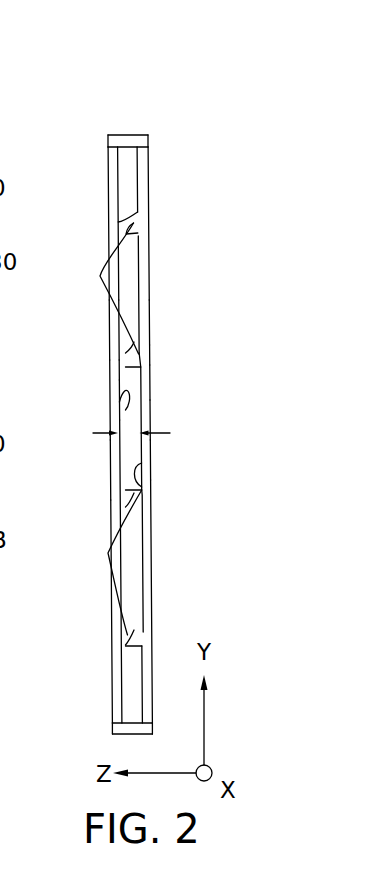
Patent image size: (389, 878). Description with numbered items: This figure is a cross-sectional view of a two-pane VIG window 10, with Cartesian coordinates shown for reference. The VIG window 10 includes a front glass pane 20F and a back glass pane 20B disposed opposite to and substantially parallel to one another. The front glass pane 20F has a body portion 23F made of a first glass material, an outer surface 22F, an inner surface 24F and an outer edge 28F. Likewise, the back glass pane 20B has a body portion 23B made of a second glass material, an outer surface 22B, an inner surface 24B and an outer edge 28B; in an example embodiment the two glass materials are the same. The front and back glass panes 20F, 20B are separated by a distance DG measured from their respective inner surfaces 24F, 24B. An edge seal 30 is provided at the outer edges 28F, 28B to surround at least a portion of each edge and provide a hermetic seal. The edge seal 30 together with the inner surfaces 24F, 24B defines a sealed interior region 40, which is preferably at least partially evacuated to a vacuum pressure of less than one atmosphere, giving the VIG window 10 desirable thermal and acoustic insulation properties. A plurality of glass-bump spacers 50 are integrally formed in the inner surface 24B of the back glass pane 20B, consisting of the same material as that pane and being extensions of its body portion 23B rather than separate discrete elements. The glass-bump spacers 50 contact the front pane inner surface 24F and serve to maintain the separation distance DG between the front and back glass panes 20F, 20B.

The VIG window 10 is at (116, 76).
The front glass pane 20F is at (104, 176).
The back glass pane 20B is at (156, 162).
The outer surface of front glass pane 22F is at (110, 473).
The outer surface of back glass pane 22B is at (150, 330).
The body portion of front glass pane 23F is at (112, 347).
The body portion of back glass pane 23B is at (148, 390).
The inner surface of front glass pane 24F is at (119, 396).
The inner surface of back glass pane 24B is at (135, 463).
The outer edge of front glass pane 28F is at (110, 142).
The outer edge of back glass pane 28B is at (148, 138).
The edge seal 30 is at (129, 139).
The sealed interior region 40 is at (131, 278).
The glass-bump spacer 50 is at (100, 276).
The separation distance DG is at (161, 432).